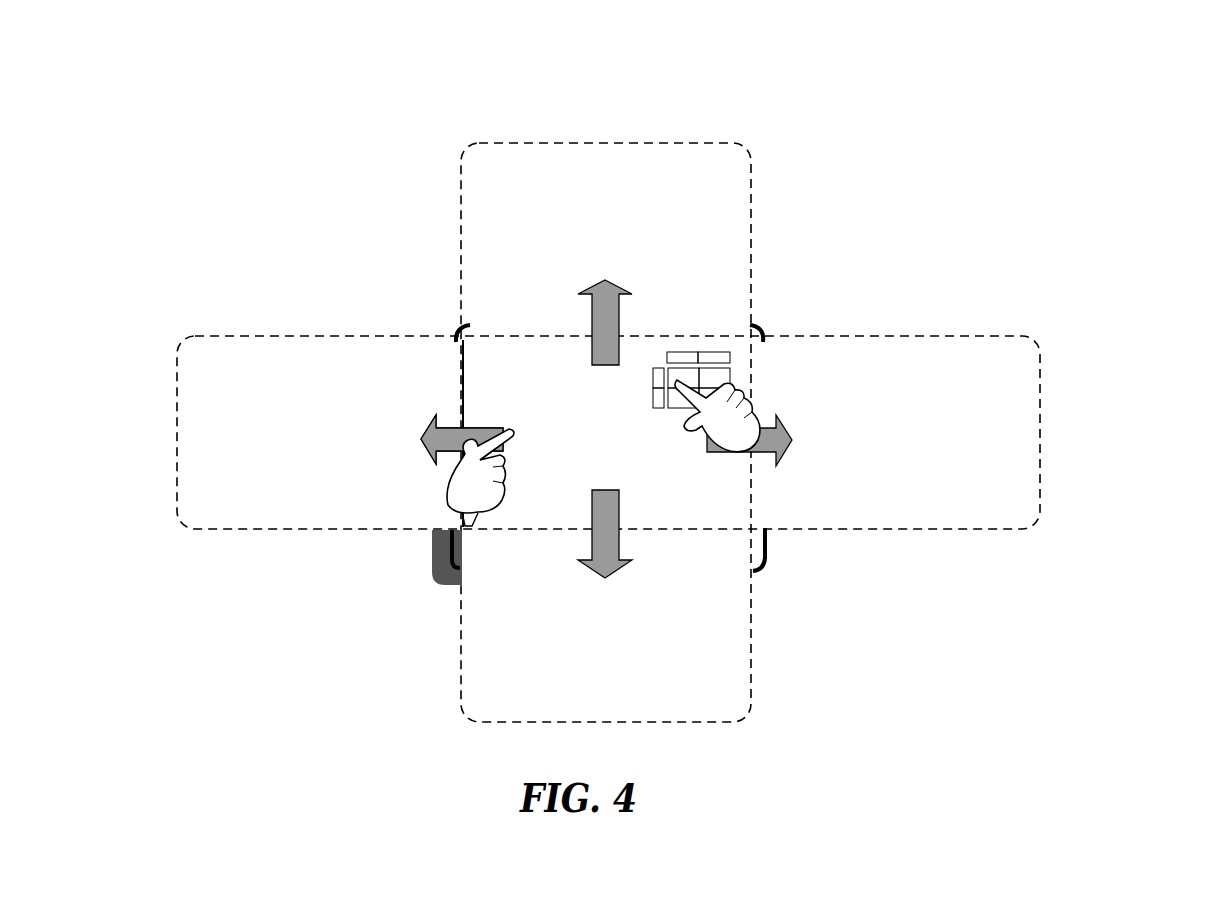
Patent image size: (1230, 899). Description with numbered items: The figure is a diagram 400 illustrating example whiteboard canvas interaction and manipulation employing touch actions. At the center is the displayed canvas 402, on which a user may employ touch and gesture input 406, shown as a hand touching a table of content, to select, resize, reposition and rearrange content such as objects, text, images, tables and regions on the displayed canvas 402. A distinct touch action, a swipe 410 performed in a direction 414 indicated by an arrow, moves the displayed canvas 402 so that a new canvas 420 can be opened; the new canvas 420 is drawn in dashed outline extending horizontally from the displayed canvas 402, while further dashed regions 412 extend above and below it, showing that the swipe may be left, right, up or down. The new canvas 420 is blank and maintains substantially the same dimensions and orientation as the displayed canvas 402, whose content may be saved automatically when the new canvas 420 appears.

The diagram 400 is at (1118, 45).
The displayed canvas 402 is at (646, 336).
The touch and gesture input 406 is at (735, 411).
The swipe 410 is at (518, 452).
The vertical extended display area 412 is at (512, 138).
The direction 414 is at (418, 421).
The new canvas 420 is at (223, 338).